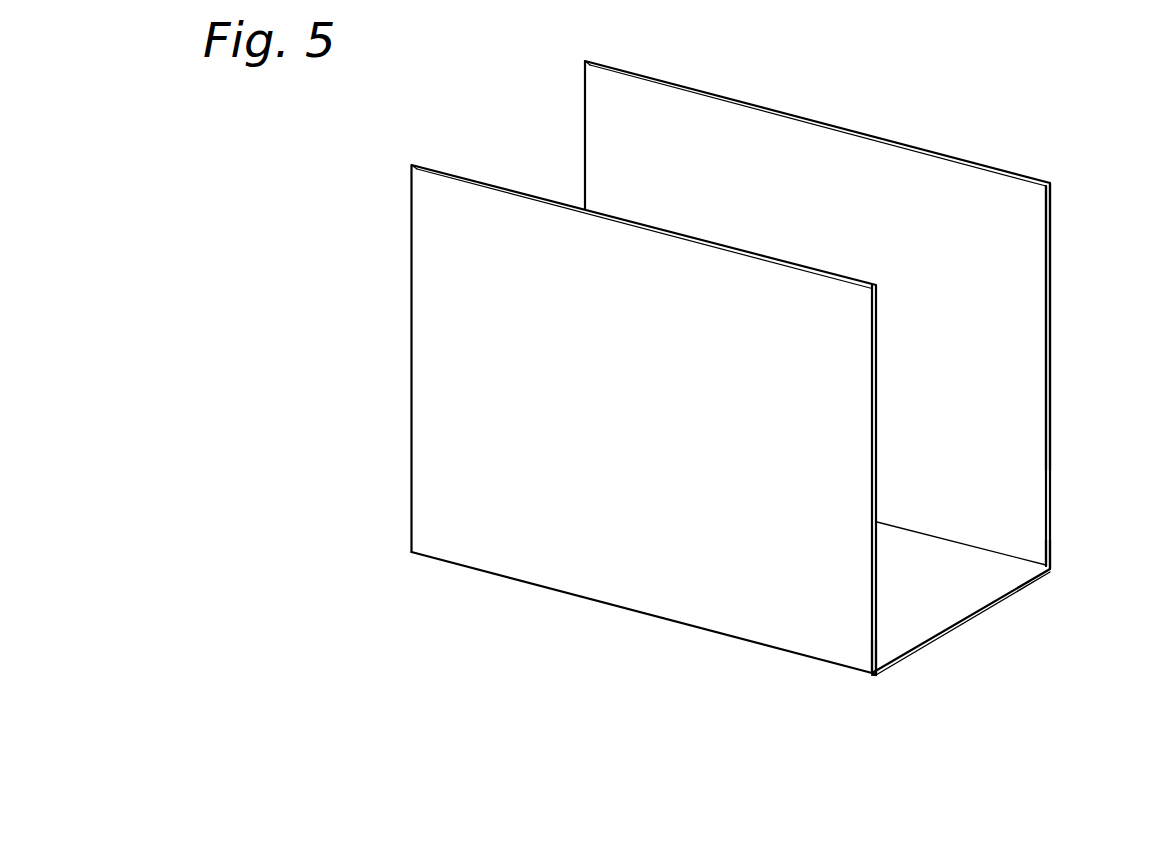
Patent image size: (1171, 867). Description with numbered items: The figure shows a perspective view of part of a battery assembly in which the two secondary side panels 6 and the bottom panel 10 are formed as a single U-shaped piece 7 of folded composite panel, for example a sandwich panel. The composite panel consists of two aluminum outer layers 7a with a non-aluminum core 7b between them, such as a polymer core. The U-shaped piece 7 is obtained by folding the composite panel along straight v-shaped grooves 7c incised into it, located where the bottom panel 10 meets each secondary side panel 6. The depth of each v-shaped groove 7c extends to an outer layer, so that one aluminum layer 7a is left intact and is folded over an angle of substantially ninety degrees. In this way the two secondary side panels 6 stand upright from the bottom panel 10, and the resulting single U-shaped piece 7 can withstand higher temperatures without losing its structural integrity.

The secondary side panel 6 is at (545, 272).
The single U-shaped piece 7 is at (378, 276).
The aluminum outer layer 7a is at (1053, 245).
The non-aluminum core 7b is at (1050, 388).
The v-shaped groove 7c is at (1050, 568).
The bottom panel 10 is at (942, 610).